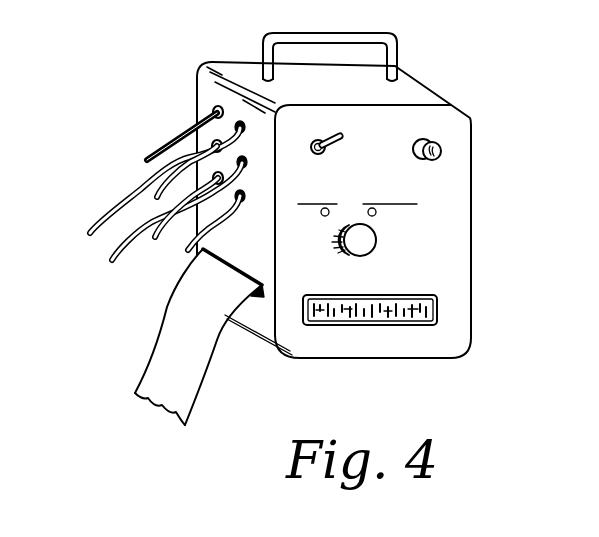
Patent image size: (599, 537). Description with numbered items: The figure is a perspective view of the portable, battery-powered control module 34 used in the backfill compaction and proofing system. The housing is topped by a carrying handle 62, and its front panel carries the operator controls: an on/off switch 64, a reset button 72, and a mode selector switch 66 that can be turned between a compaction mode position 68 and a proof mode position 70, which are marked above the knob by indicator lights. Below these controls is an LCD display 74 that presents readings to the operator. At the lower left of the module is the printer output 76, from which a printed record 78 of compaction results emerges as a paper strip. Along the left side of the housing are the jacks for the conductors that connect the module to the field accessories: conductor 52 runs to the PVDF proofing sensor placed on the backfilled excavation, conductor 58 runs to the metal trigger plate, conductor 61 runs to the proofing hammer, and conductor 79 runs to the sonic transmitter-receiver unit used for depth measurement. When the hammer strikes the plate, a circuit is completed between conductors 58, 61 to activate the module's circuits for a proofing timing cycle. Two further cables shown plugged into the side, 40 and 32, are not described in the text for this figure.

The control module 34 is at (480, 117).
The carrying handle 62 is at (399, 37).
The conductor 52 is at (205, 113).
The conductor 61 is at (168, 145).
The conductor 58 is at (140, 185).
The sensor tube 40 is at (217, 200).
The conductor 79 is at (123, 243).
The sensor tube 32 is at (213, 232).
The printed record 78 is at (160, 335).
The printer output 76 is at (257, 295).
The on/off switch 64 is at (343, 135).
The reset button 72 is at (442, 153).
The compaction mode position 68 is at (323, 216).
The proof mode position 70 is at (377, 213).
The mode selector switch 66 is at (377, 241).
The LCD display 74 is at (437, 311).